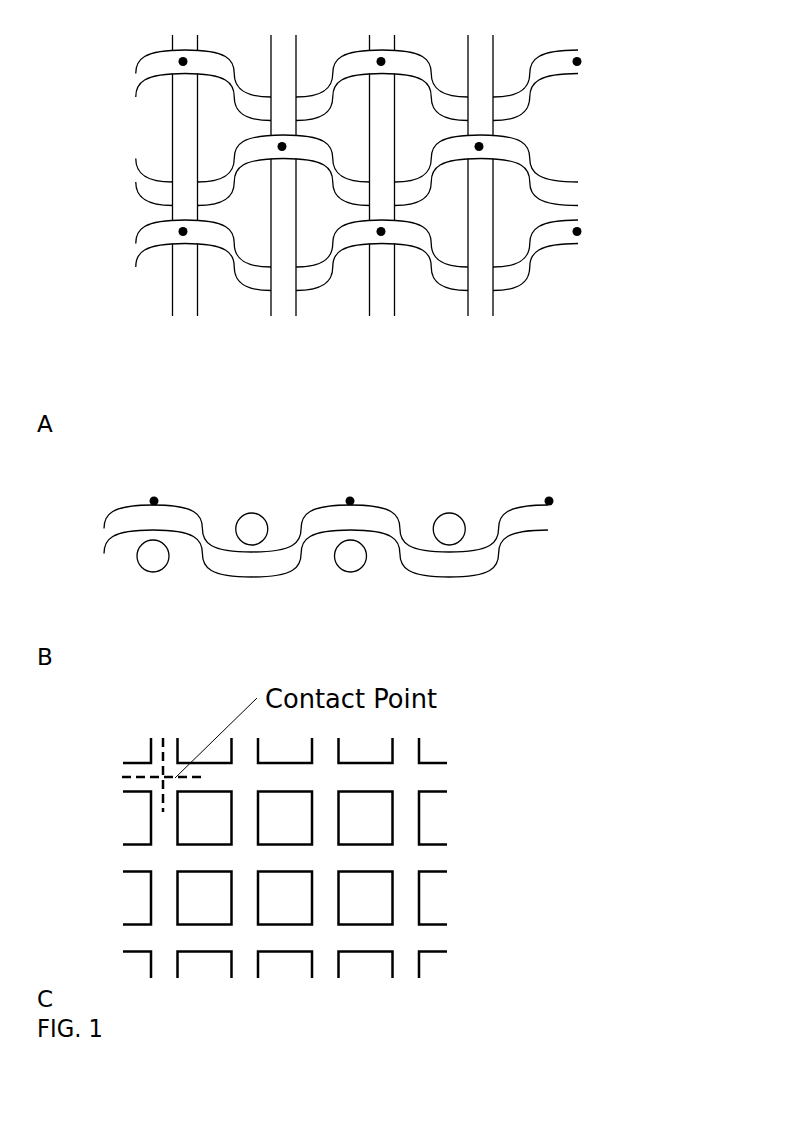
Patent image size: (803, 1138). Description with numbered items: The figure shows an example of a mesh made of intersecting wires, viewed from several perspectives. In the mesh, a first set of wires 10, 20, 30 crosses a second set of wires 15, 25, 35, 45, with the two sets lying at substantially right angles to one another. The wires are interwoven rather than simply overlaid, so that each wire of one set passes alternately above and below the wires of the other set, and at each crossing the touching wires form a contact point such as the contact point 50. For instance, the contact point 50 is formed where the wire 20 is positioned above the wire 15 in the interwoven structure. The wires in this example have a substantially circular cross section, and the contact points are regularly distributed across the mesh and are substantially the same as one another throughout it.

The wire 10 is at (578, 73).
The wire 20 is at (577, 183).
The wire 30 is at (573, 243).
The wire 15 is at (182, 317).
The wire 25 is at (283, 317).
The wire 35 is at (380, 317).
The wire 45 is at (478, 317).
The contact point 50 is at (282, 147).